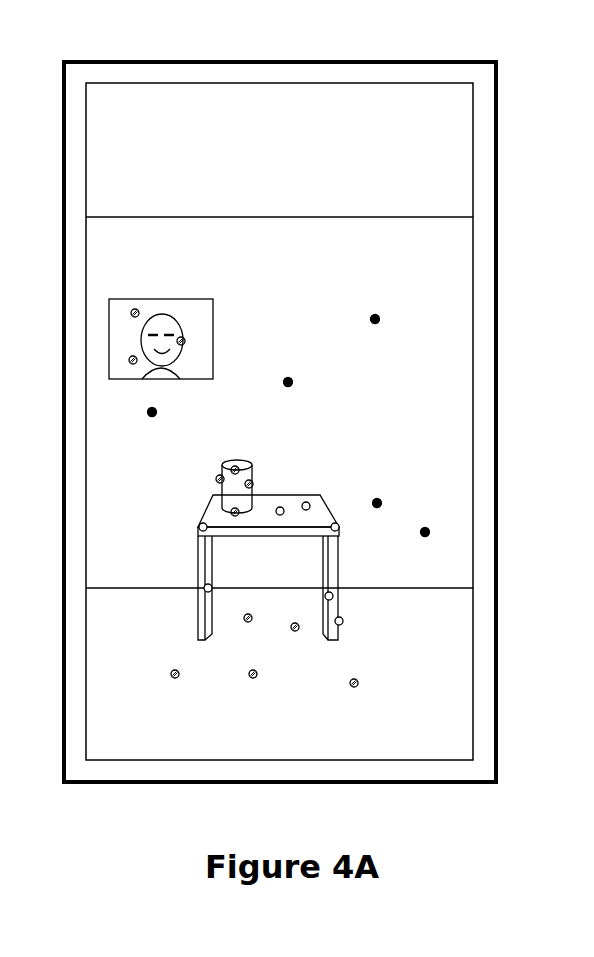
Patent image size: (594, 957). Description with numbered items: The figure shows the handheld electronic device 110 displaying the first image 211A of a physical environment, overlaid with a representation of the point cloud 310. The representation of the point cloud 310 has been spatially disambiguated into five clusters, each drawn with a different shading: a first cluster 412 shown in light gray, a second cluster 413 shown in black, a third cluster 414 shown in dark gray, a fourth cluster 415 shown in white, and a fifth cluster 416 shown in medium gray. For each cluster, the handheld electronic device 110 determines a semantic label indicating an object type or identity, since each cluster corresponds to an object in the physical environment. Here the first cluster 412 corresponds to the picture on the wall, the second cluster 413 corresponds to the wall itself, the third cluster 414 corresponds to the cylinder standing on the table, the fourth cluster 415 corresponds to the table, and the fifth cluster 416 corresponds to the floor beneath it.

The handheld electronic device 110 is at (320, 58).
The first image 211A is at (458, 283).
The point cloud 310 is at (356, 293).
The first cluster 412 is at (134, 300).
The second cluster 413 is at (306, 364).
The third cluster 414 is at (263, 475).
The fourth cluster 415 is at (342, 515).
The fifth cluster 416 is at (165, 666).